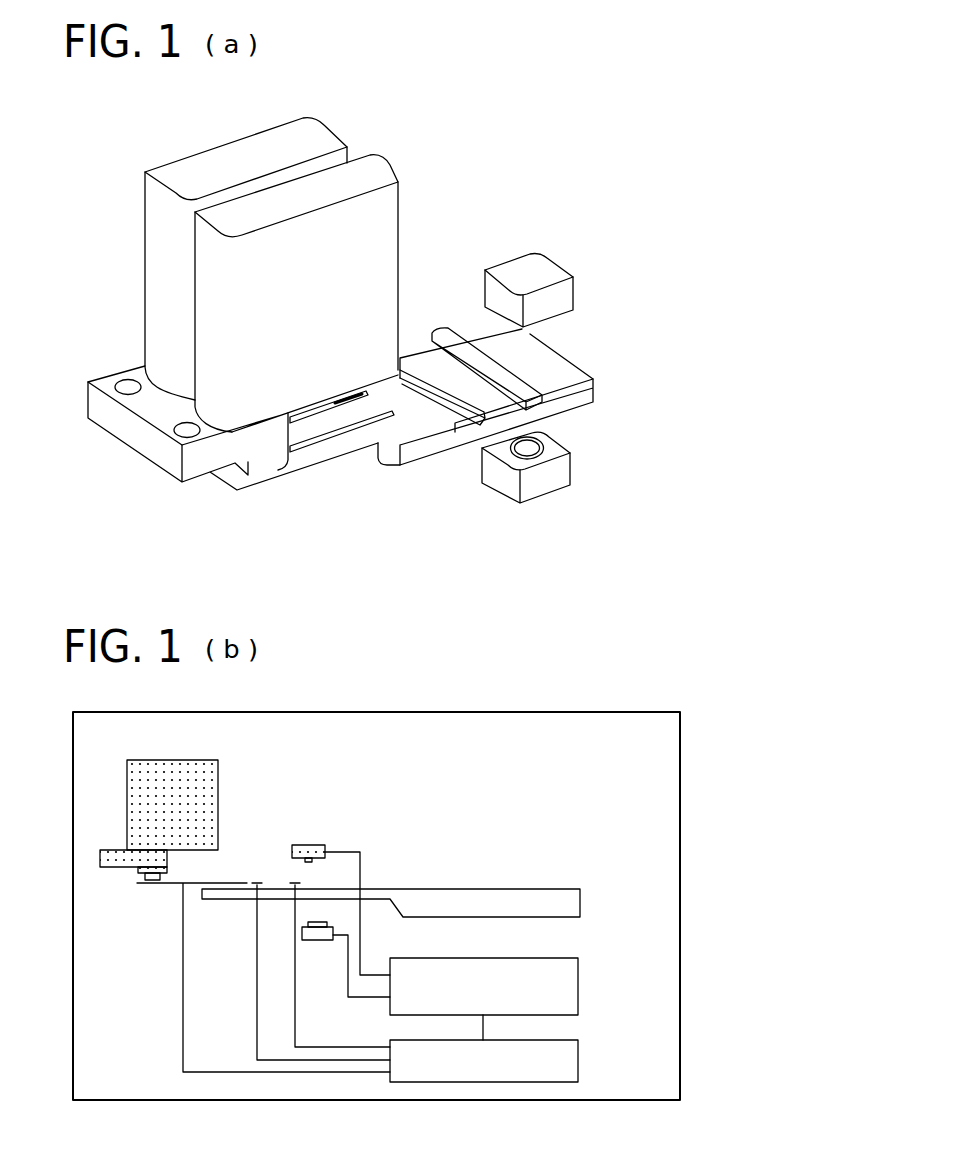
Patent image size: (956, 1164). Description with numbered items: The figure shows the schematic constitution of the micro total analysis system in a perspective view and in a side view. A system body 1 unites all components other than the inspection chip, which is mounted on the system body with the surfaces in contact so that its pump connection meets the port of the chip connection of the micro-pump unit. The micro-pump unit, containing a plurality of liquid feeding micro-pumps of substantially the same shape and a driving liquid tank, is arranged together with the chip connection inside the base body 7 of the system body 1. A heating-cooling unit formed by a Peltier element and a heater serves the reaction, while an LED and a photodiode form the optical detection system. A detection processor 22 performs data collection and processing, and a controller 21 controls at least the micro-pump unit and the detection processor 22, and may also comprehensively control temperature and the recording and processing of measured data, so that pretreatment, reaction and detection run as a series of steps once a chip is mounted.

The system body 1 is at (690, 858).
The base body 7 is at (680, 972).
The controller 21 is at (580, 1068).
The detection processor 22 is at (580, 987).